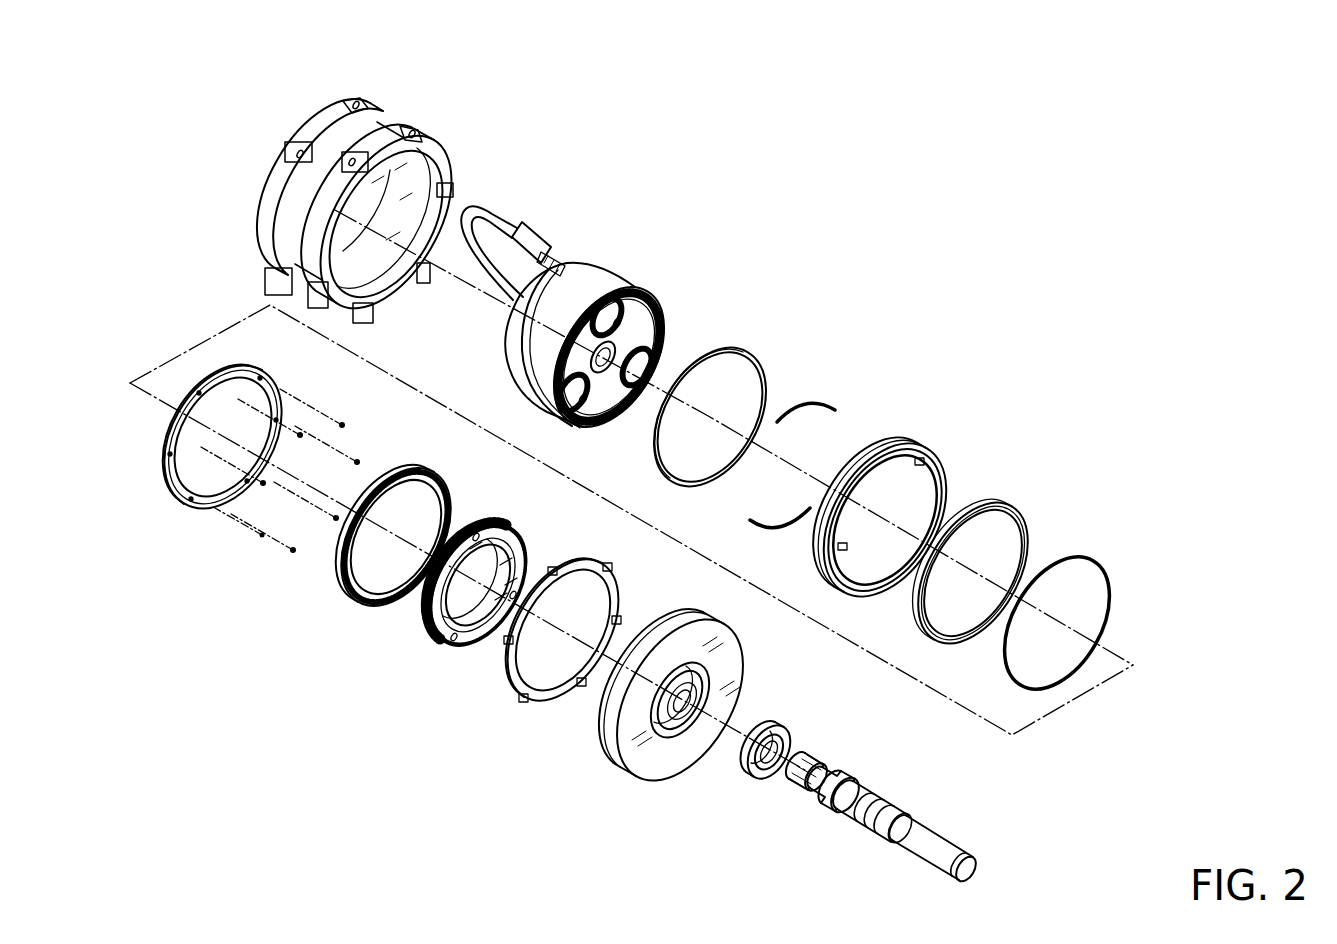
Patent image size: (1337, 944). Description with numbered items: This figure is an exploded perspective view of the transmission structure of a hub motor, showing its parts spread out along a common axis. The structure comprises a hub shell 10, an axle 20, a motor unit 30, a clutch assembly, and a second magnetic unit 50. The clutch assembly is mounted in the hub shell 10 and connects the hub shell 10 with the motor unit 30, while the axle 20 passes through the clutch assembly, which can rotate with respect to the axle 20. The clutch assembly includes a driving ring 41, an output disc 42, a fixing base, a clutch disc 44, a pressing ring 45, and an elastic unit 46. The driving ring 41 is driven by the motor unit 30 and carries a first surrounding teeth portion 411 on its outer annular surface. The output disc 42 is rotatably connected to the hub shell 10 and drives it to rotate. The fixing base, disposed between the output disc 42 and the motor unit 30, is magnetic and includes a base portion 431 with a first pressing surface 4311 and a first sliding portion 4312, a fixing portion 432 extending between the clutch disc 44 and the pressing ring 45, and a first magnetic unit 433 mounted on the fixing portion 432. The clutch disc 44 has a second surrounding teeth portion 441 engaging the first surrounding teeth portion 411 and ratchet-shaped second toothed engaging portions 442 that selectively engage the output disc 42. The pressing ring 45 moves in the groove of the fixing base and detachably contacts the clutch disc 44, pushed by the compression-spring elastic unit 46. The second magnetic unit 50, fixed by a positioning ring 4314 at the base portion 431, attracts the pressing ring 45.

The hub shell 10 is at (637, 762).
The axle 20 is at (935, 846).
The motor unit 30 is at (600, 262).
The driving ring 41 is at (447, 630).
The first surrounding teeth portion 411 is at (432, 627).
The output disc 42 is at (517, 690).
The base portion 431 is at (939, 458).
The first pressing surface 4311 is at (942, 462).
The first sliding portion 4312 is at (921, 450).
The positioning ring 4314 is at (748, 350).
The clutch disc 44 is at (301, 562).
The second surrounding teeth portion 441 is at (378, 582).
The second toothed engaging portions 442 is at (340, 587).
The fixing portion 432 is at (190, 512).
The first magnetic unit 433 is at (258, 513).
The pressing ring 45 is at (1018, 518).
The elastic unit 46 is at (1105, 560).
The second magnetic unit 50 is at (815, 395).